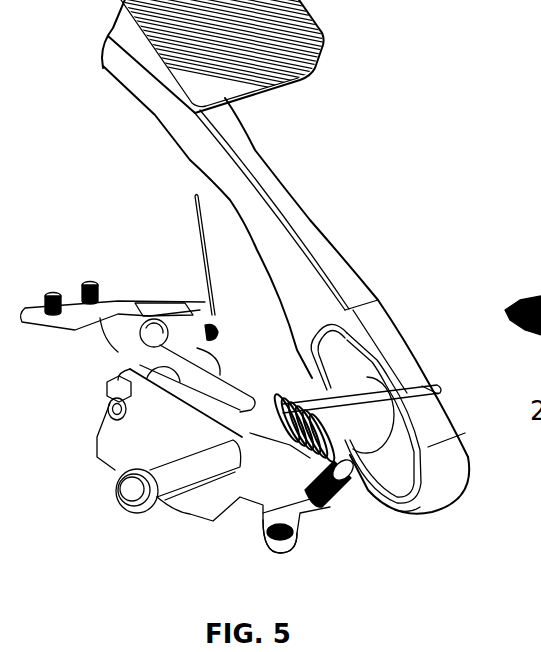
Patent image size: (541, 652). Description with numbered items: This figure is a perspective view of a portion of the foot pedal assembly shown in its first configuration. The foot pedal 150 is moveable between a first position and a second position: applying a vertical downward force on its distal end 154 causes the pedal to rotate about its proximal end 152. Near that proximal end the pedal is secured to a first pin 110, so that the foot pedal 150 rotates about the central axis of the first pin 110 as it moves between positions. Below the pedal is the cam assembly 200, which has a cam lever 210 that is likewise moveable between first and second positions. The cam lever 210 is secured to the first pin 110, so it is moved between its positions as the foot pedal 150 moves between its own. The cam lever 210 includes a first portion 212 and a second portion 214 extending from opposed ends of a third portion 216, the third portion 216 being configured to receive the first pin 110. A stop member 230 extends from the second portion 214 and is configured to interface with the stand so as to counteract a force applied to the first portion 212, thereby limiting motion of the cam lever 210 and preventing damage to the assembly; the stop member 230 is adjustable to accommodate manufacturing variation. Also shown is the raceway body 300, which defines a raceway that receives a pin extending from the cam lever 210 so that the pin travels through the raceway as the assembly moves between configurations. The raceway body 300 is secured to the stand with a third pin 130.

The first pin 110 is at (127, 494).
The third pin 130 is at (143, 342).
The foot pedal 150 is at (313, 227).
The proximal end 152 is at (452, 480).
The distal end 154 is at (117, 70).
The cam assembly 200 is at (343, 515).
The cam lever 210 is at (103, 452).
The first portion 212 is at (103, 432).
The second portion 214 is at (337, 513).
The third portion 216 is at (193, 498).
The stop member 230 is at (398, 512).
The raceway body 300 is at (220, 361).